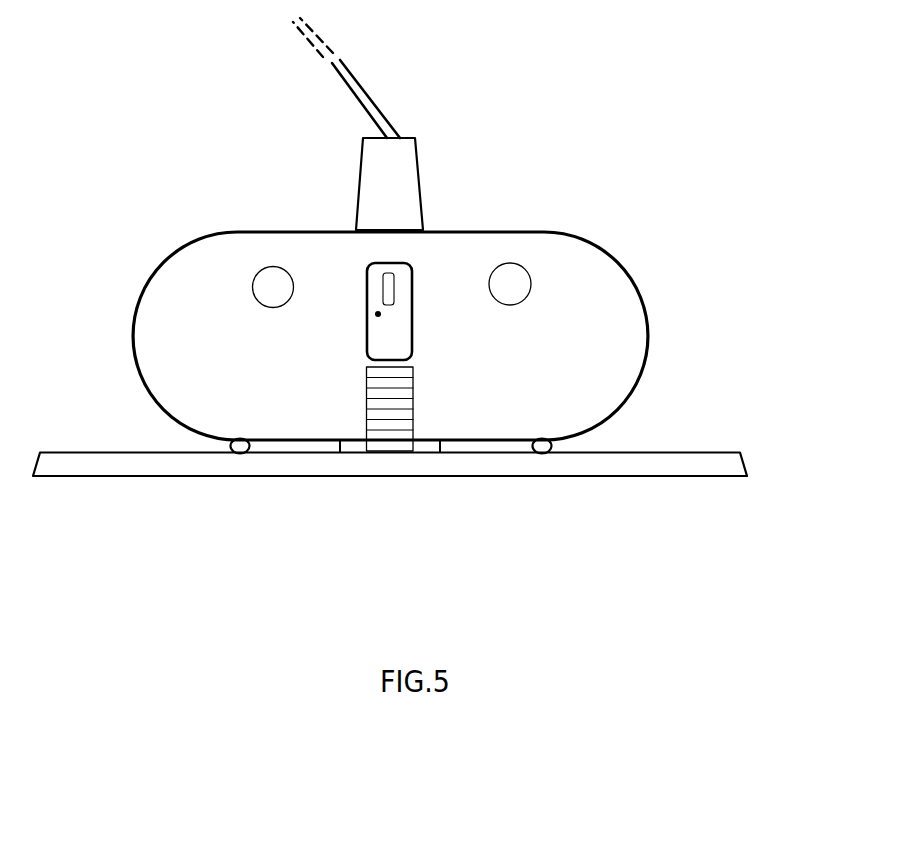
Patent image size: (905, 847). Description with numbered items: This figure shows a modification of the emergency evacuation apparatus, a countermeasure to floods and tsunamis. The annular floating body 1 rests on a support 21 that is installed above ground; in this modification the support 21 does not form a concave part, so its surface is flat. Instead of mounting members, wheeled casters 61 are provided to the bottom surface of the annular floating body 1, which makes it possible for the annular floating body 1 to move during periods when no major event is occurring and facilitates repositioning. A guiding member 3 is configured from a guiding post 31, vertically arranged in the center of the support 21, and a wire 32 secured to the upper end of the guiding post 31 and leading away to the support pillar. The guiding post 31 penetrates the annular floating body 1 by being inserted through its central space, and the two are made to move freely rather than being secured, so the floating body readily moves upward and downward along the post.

The annular floating body 1 is at (587, 258).
The guiding member 3 is at (394, 124).
The guiding post 31 is at (407, 190).
The wire 32 is at (363, 112).
The support 21 is at (690, 453).
The caster 61 is at (240, 453).